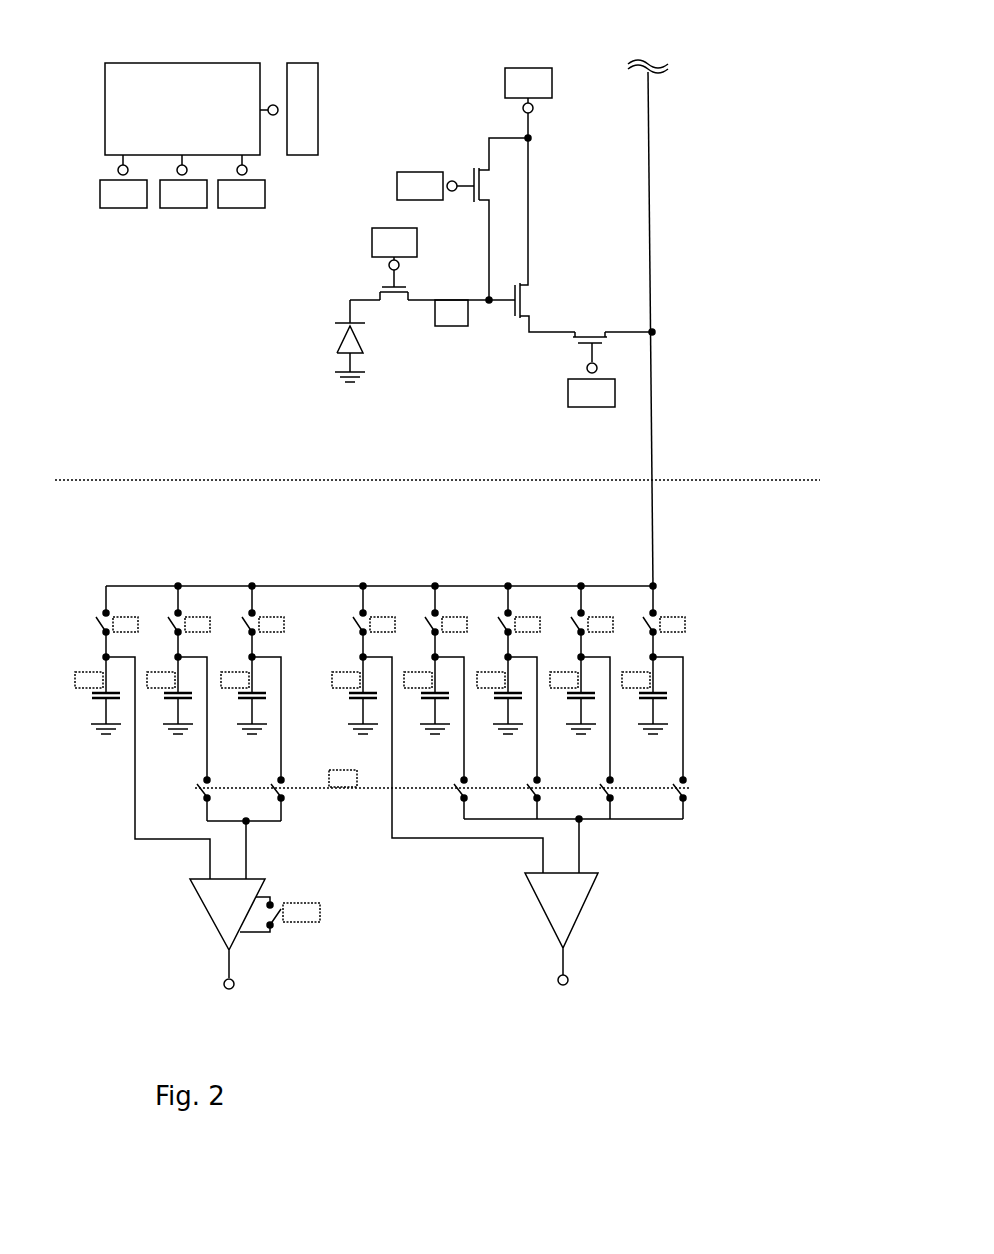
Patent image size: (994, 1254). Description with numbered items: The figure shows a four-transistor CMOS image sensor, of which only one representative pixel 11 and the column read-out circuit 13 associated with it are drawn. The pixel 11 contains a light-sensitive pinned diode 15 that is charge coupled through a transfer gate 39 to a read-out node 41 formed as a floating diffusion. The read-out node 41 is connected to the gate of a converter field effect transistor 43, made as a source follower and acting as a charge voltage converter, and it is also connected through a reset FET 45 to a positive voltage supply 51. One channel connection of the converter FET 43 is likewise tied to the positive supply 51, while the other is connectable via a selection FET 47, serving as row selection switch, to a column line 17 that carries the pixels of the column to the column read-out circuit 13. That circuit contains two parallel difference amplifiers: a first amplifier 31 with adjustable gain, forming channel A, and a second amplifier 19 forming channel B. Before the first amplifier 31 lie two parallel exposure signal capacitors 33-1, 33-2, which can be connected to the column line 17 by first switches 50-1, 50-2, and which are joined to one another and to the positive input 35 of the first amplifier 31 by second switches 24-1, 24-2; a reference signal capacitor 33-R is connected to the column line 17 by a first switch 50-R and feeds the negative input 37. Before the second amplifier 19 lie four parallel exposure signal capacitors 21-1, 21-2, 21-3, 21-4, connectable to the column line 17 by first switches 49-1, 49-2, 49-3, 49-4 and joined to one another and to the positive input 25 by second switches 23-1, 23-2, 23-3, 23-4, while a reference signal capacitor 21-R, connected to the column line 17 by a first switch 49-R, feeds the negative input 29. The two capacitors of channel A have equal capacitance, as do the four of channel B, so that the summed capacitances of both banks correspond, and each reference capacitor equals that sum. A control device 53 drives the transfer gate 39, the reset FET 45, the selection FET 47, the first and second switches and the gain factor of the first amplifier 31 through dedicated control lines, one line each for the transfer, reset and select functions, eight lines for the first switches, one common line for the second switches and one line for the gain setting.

The pixel 11 is at (238, 297).
The column read-out circuit 13 is at (725, 706).
The pinned diode 15 is at (330, 338).
The column line 17 is at (656, 183).
The second difference amplifier 19 is at (591, 910).
The reference signal capacitor 21-R is at (354, 694).
The capacitor for exposure signals 21-1 is at (426, 694).
The capacitor for exposure signals 21-2 is at (499, 694).
The capacitor for exposure signals 21-3 is at (572, 694).
The capacitor for exposure signals 21-4 is at (644, 694).
The second switch 23-1 is at (448, 738).
The second switch 23-2 is at (521, 738).
The second switch 23-3 is at (594, 738).
The second switch 23-4 is at (667, 738).
The second switch 24-1 is at (191, 739).
The second switch 24-2 is at (265, 739).
The positive input of the second amplifier 25 is at (585, 868).
The negative input of the second amplifier 29 is at (536, 869).
The first difference amplifier 31 is at (203, 918).
The reference signal capacitor 33-R is at (97, 694).
The capacitor for exposure signals 33-1 is at (169, 694).
The capacitor for exposure signals 33-2 is at (243, 694).
The positive input of the first amplifier 35 is at (255, 874).
The negative input of the first amplifier 37 is at (204, 876).
The transfer gate 39 is at (394, 302).
The read-out node 41 is at (452, 296).
The converter field effect transistor 43 is at (533, 298).
The reset FET 45 is at (473, 170).
The selection FET 47 is at (595, 330).
The first switch 49-R is at (377, 621).
The first switch 49-1 is at (449, 621).
The first switch 49-2 is at (522, 621).
The first switch 49-3 is at (595, 621).
The first switch 49-4 is at (667, 621).
The first switch 50-R is at (120, 621).
The first switch 50-1 is at (192, 621).
The first switch 50-2 is at (266, 621).
The positive voltage supply 51 is at (528, 66).
The control device 53 is at (185, 62).